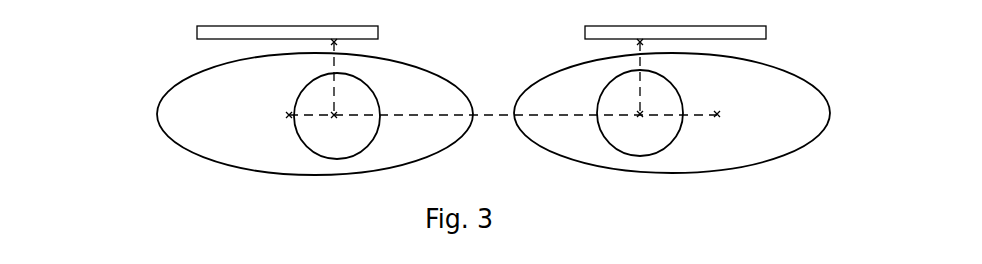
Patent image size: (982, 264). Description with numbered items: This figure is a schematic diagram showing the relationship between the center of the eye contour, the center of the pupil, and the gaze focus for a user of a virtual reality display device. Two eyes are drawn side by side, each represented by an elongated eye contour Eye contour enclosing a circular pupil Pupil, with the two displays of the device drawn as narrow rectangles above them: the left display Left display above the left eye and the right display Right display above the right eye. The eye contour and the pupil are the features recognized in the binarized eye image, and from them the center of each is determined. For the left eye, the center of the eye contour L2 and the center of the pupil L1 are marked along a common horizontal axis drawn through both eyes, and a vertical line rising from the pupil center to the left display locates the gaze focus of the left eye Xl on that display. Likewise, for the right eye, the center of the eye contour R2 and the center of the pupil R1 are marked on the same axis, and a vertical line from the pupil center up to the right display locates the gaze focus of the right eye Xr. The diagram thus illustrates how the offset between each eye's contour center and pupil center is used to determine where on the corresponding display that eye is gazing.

The left display Left display is at (235, 33).
The right display Right display is at (738, 33).
The eye contour Eye contour is at (182, 146).
The pupil Pupil is at (305, 86).
The gaze focus of the left eye Xl is at (337, 42).
The gaze focus of the right eye Xr is at (637, 42).
The center of the pupil of the left eye L1 is at (333, 130).
The center of the eye contour of the left eye L2 is at (289, 130).
The center of the pupil of the right eye R1 is at (641, 129).
The center of the eye contour of the right eye R2 is at (714, 128).